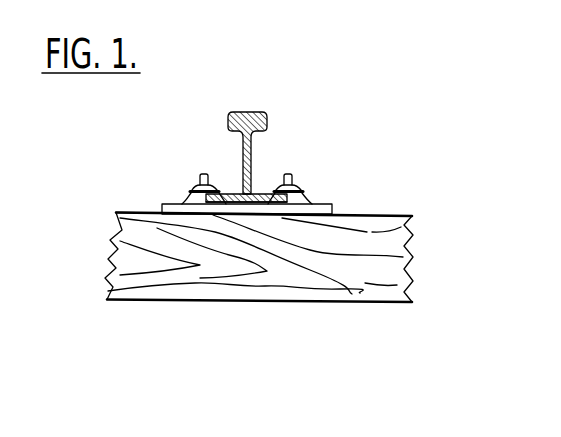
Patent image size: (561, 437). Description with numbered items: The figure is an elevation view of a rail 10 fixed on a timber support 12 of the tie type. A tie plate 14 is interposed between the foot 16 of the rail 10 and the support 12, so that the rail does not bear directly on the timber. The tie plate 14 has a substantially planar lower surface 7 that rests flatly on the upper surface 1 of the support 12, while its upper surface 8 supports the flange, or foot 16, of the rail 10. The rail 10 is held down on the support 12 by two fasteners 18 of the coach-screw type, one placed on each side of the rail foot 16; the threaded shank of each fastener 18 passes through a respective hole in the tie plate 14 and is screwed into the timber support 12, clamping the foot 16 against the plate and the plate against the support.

The upper surface 1 is at (379, 216).
The lower surface 7 is at (173, 214).
The upper surface 8 is at (224, 194).
The rail 10 is at (258, 153).
The timber support 12 is at (364, 283).
The tie plate 14 is at (313, 204).
The foot 16 is at (269, 194).
The fasteners 18 is at (197, 190).